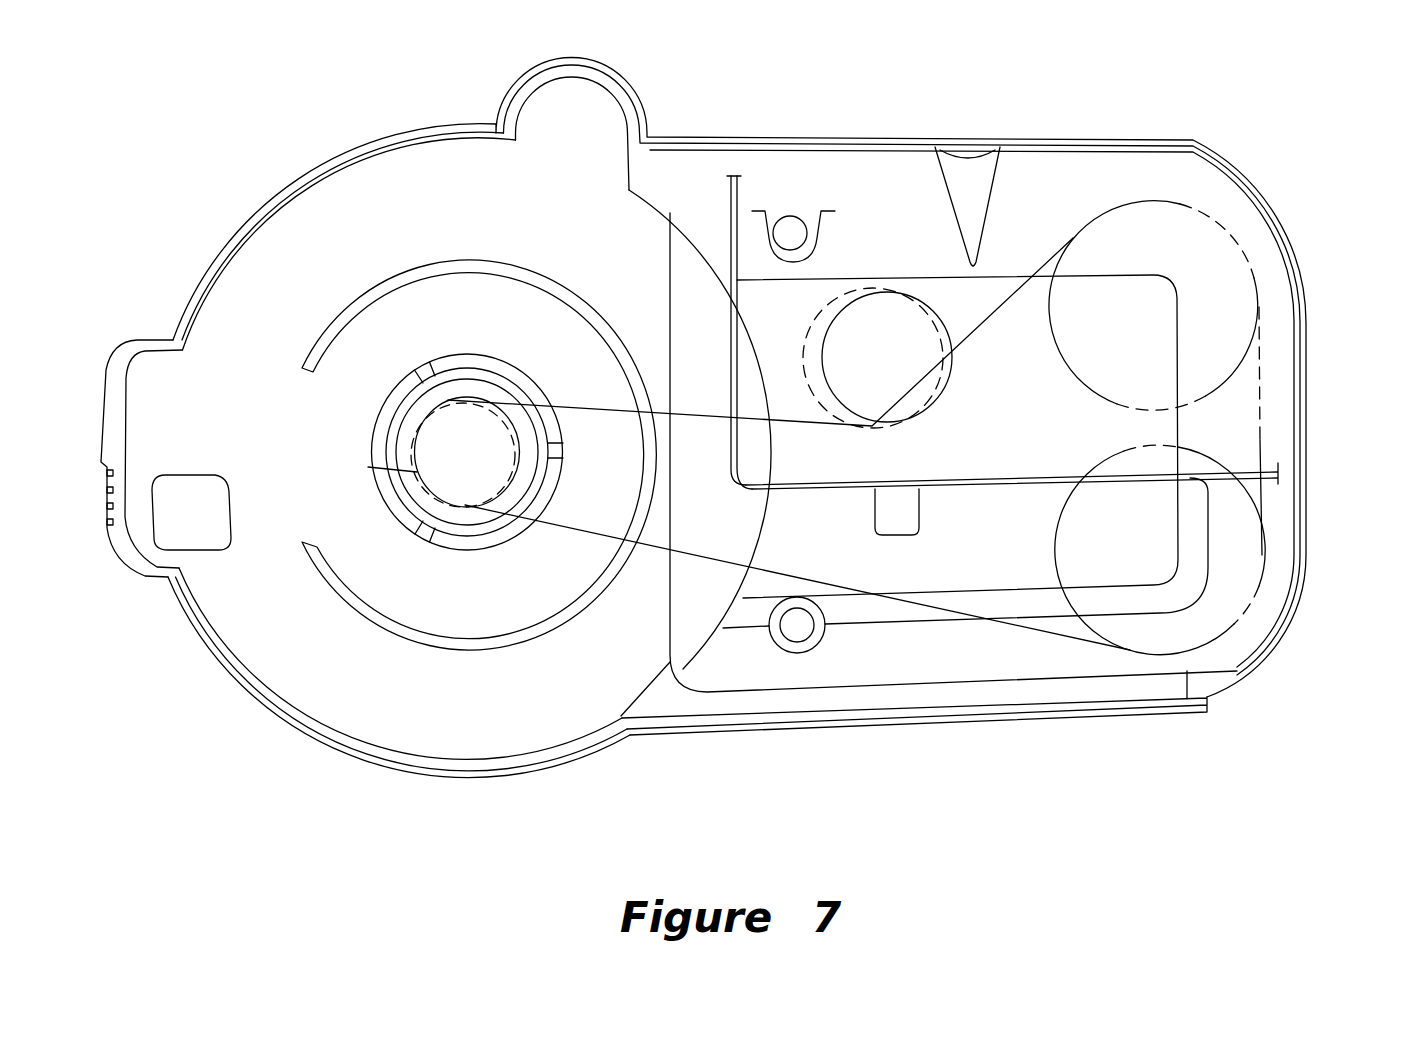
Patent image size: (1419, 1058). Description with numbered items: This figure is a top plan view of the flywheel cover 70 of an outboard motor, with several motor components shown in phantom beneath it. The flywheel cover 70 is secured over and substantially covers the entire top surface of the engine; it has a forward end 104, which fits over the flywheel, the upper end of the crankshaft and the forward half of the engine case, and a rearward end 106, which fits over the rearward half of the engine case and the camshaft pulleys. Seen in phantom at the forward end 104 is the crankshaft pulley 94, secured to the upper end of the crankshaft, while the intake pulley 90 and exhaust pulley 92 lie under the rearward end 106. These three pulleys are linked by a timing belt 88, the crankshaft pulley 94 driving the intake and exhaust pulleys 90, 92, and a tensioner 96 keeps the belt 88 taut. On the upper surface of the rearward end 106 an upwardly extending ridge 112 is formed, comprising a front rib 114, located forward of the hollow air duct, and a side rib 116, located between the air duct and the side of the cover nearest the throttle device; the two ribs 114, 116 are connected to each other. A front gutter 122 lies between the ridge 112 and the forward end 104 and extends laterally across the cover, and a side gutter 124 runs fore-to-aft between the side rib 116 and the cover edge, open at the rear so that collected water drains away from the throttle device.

The flywheel cover 70 is at (285, 270).
The forward end 104 is at (363, 180).
The rearward end 106 is at (1063, 177).
The side gutter 124 is at (970, 660).
The front gutter 122 is at (683, 320).
The timing belt 88 is at (597, 538).
The crankshaft pulley 94 is at (365, 467).
The tensioner 96 is at (920, 277).
The exhaust pulley 92 is at (1253, 273).
The intake pulley 90 is at (1263, 555).
The front rib 114 is at (740, 372).
The side rib 116 is at (1017, 468).
The ridge 112 is at (807, 473).